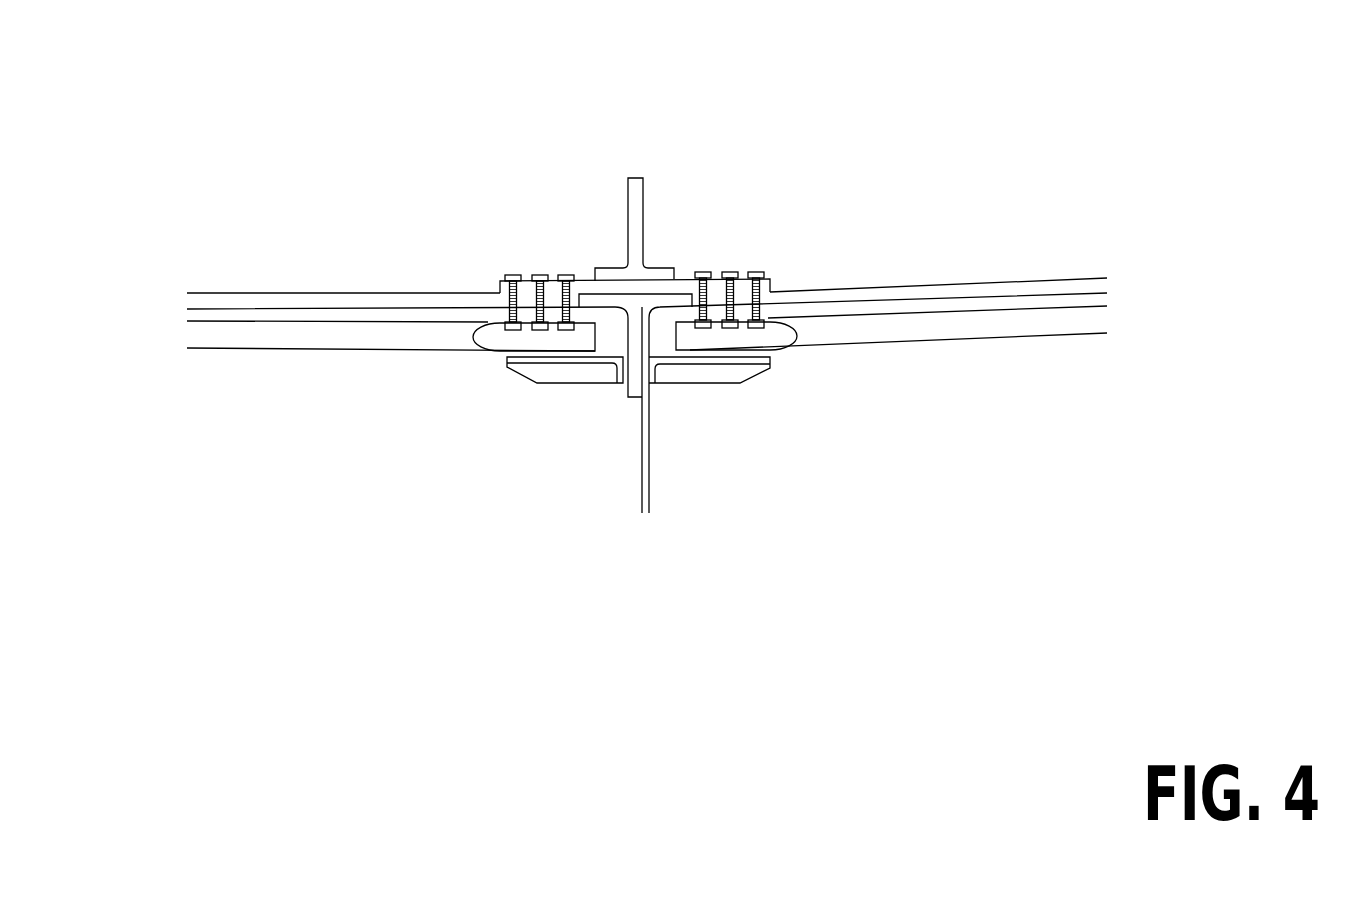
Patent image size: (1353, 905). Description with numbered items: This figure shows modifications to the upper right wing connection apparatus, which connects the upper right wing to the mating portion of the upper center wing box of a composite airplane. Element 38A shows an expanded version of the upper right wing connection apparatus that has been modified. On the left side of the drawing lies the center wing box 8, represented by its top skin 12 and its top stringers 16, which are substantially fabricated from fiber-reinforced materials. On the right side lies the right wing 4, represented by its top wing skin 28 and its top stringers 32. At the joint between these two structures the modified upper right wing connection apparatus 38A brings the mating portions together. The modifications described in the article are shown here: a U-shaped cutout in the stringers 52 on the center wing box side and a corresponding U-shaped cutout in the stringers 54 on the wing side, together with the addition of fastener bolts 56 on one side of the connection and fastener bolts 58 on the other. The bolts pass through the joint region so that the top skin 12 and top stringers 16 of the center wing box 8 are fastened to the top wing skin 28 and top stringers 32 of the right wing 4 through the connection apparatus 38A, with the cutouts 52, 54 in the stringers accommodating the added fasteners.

The right wing 4 is at (978, 458).
The center wing box 8 is at (322, 480).
The top skin 12 is at (280, 291).
The top stringers 16 is at (282, 350).
The top wing skin 28 is at (840, 287).
The top stringers 32 is at (842, 347).
The upper right wing connection apparatus 38A is at (633, 125).
The U-shaped cutout in the stringers 52 is at (481, 345).
The U-shaped cutout in the stringers 54 is at (792, 344).
The fastener bolts 56 is at (540, 267).
The fastener bolts 58 is at (732, 262).